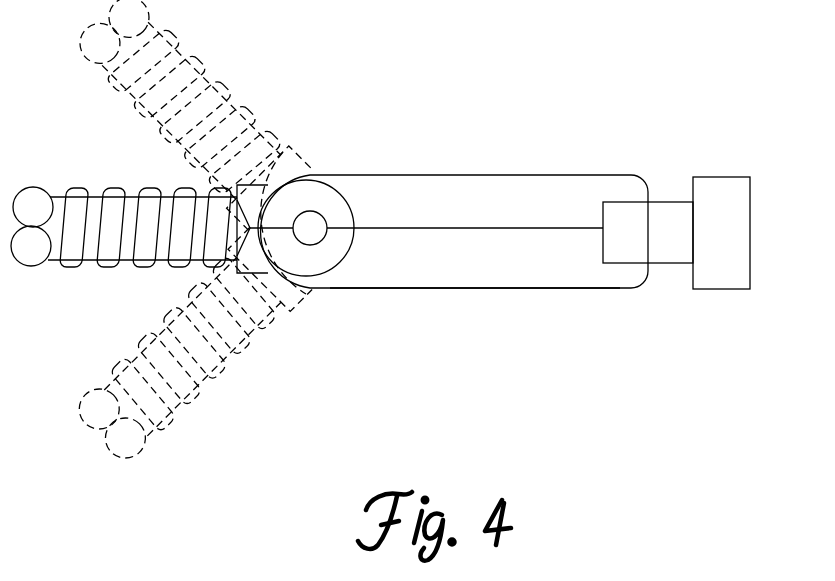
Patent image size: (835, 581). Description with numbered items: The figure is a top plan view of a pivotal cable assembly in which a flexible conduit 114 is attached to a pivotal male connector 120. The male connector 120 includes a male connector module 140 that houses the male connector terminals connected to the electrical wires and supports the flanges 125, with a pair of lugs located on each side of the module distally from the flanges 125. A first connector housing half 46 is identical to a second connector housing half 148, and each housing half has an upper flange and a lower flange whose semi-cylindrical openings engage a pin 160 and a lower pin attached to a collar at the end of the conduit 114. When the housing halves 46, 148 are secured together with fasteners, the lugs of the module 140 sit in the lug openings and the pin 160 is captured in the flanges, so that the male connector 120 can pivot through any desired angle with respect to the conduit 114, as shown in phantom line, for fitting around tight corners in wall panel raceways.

The conduit 114 is at (145, 190).
The pivotal male connector 120 is at (492, 143).
The flanges 125 is at (749, 177).
The male connector module 140 is at (658, 210).
The gripper body 46 is at (572, 184).
The second connector housing half 148 is at (556, 290).
The pin 160 is at (318, 222).